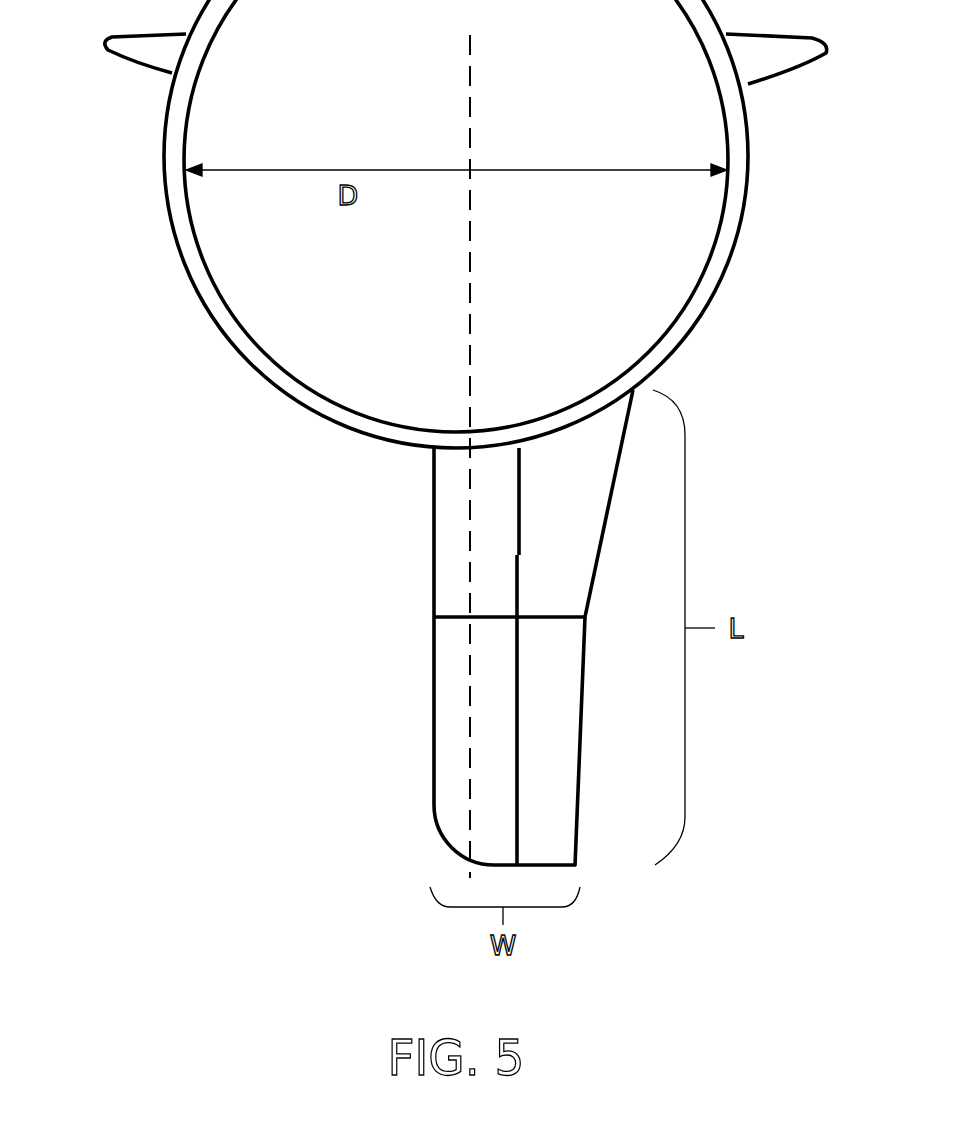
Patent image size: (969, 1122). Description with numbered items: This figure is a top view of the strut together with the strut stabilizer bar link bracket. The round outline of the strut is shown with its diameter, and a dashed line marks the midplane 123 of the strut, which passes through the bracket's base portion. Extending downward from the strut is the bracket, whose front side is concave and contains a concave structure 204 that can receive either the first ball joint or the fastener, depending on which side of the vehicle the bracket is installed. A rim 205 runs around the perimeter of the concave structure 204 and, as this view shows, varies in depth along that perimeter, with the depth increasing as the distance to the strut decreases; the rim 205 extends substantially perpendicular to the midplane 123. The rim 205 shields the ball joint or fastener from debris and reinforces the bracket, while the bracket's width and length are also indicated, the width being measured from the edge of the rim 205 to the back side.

The concave structure 204 is at (492, 558).
The rim 205 is at (577, 817).
The midplane 123 is at (468, 866).